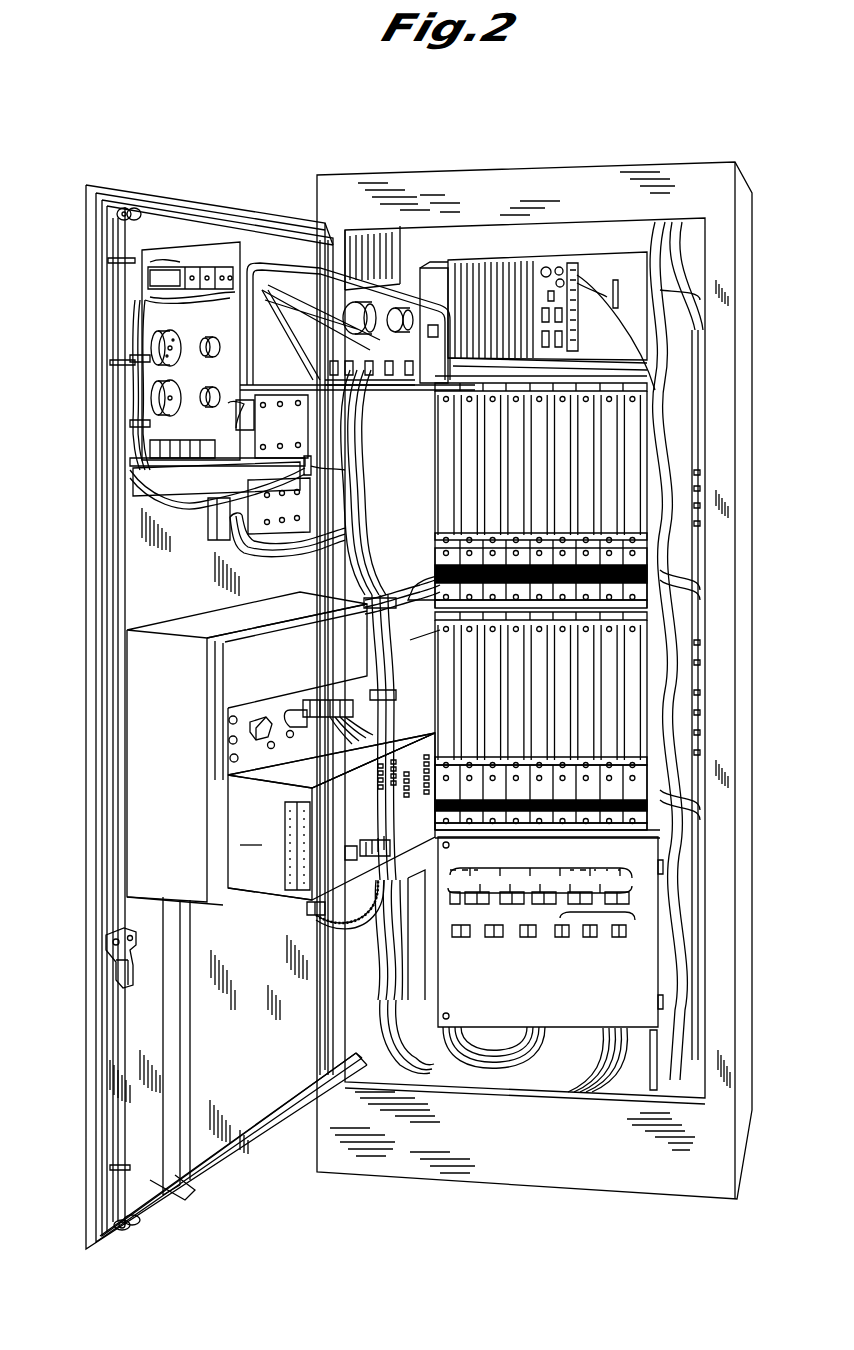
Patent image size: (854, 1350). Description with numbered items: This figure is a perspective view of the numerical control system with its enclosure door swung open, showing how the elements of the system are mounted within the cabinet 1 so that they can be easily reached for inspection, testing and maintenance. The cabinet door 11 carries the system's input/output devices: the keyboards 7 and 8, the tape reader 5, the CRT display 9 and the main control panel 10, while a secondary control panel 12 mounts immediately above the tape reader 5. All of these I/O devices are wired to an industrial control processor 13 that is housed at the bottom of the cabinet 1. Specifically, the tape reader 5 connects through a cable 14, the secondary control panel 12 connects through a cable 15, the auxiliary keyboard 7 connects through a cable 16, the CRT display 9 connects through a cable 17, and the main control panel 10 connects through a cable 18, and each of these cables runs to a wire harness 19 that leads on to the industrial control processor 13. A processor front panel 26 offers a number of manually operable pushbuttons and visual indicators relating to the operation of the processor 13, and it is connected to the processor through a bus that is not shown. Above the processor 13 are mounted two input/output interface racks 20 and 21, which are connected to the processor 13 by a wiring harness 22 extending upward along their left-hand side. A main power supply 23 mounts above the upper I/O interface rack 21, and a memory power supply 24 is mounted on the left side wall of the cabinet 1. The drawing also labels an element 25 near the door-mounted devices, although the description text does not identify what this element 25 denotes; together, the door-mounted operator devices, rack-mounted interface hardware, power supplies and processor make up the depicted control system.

The cabinet 1 is at (748, 252).
The tape reader 5 is at (331, 824).
The auxiliary keyboard 7 is at (228, 507).
The keyboard 8 is at (290, 448).
The CRT display 9 is at (298, 270).
The main control panel 10 is at (140, 320).
The cabinet door 11 is at (95, 735).
The secondary control panel 12 is at (290, 702).
The industrial control processor 13 is at (608, 972).
The cable 14 is at (315, 920).
The cable 15 is at (336, 752).
The cable 16 is at (302, 560).
The cable 17 is at (358, 470).
The cable 18 is at (168, 488).
The wire harness 19 is at (372, 1050).
The I/O interface rack 20 is at (617, 718).
The I/O interface rack 21 is at (602, 482).
The wiring harness 22 is at (420, 588).
The main power supply 23 is at (548, 268).
The memory power supply 24 is at (405, 890).
The connector 25 is at (285, 445).
The processor front panel 26 is at (512, 945).